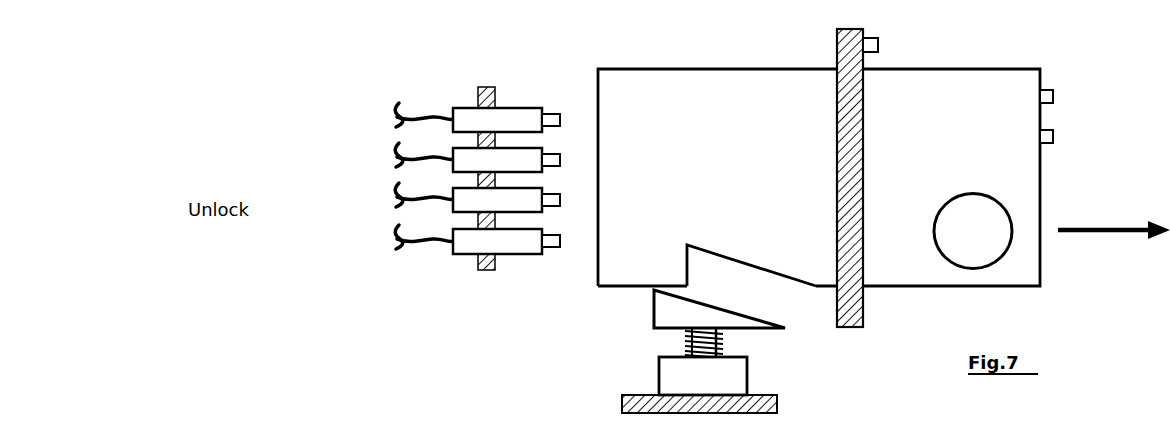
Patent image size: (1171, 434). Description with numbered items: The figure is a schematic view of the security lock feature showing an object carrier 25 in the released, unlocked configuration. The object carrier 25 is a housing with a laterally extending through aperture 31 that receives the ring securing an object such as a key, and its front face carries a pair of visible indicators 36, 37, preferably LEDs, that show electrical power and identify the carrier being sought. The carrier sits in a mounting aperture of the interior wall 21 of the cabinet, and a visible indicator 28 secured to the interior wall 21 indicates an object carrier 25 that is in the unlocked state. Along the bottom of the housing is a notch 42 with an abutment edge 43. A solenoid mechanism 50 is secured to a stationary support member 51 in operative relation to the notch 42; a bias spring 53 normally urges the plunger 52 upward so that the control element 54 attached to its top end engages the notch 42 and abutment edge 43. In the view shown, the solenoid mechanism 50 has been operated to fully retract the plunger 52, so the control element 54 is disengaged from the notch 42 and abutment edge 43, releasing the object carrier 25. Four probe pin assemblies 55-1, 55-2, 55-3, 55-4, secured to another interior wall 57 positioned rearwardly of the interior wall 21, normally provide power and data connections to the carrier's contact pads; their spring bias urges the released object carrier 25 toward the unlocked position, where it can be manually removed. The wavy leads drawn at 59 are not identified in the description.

The interior wall 21 is at (863, 307).
The object carrier 25 is at (742, 52).
The visible indicator 28 is at (880, 44).
The through aperture 31 is at (995, 227).
The visible indicator 36 is at (1055, 97).
The visible indicator 37 is at (1055, 137).
The notch 42 is at (701, 266).
The abutment edge 43 is at (647, 257).
The solenoid mechanism 50 is at (652, 375).
The support member 51 is at (757, 395).
The plunger 52 is at (723, 335).
The bias spring 53 is at (683, 347).
The control element 54 is at (680, 310).
The probe pin assembly 55-1 is at (522, 118).
The probe pin assembly 55-2 is at (475, 162).
The probe pin assembly 55-3 is at (473, 198).
The probe pin assembly 55-4 is at (482, 247).
The interior wall 57 is at (478, 98).
The connector 59 is at (397, 110).